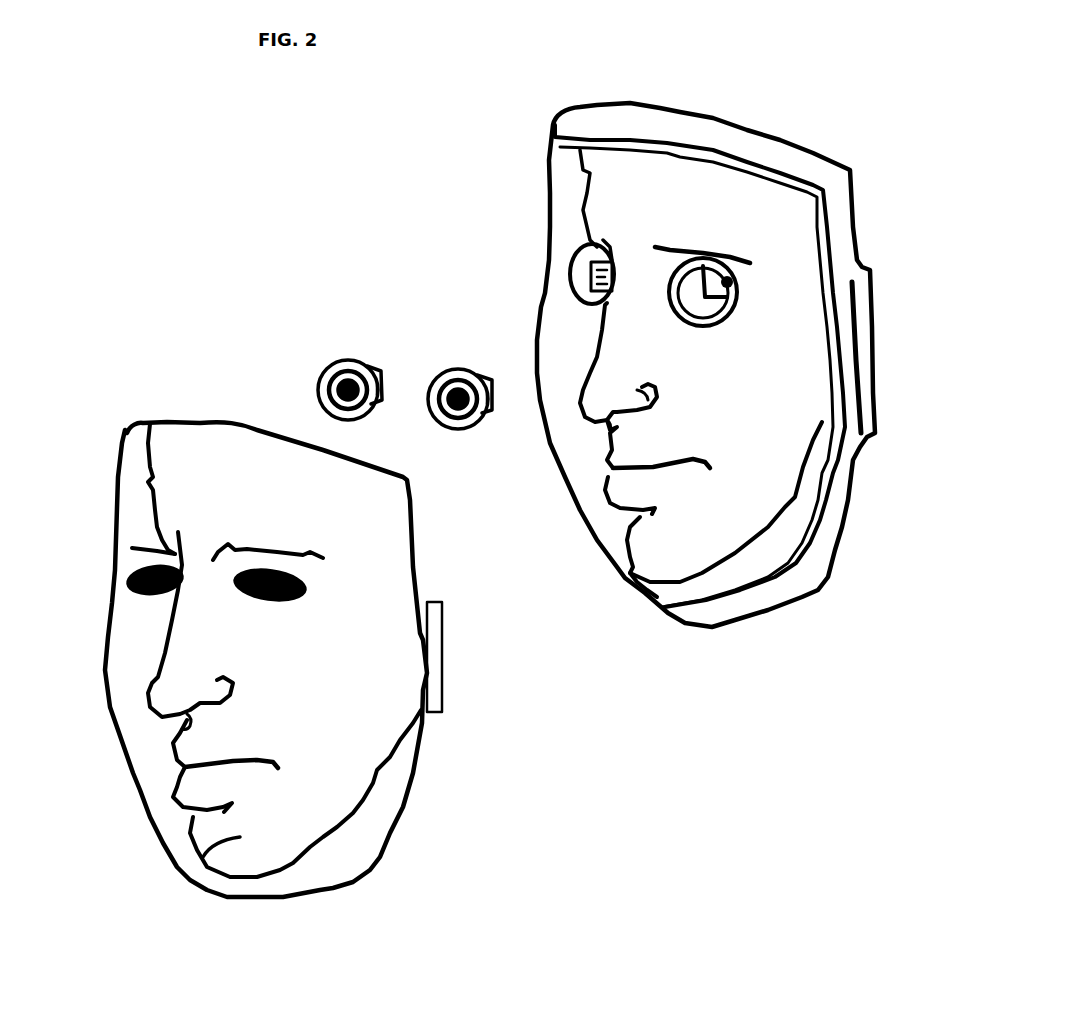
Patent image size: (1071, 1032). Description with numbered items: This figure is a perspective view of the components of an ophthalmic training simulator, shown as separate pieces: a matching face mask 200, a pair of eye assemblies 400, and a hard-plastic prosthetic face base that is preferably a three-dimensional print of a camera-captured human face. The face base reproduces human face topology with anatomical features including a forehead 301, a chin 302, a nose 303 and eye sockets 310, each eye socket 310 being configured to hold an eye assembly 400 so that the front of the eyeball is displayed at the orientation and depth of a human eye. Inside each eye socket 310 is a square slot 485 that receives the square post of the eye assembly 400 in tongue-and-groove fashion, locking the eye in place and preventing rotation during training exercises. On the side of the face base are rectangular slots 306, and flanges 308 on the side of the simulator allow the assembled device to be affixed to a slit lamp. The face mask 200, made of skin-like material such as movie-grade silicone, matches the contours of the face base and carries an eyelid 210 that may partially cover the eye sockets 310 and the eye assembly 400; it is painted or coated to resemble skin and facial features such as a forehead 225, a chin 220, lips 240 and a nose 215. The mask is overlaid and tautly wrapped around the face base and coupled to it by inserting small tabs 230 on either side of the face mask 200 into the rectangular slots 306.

The face mask 200 is at (266, 676).
The eyelid 210 is at (270, 545).
The chin 220 is at (188, 457).
The forehead 225 is at (166, 682).
The tabs 230 is at (433, 690).
The lips 240 is at (190, 785).
The nose 215 is at (196, 866).
The eye assembly 400 is at (368, 350).
The chin 302 is at (650, 556).
The eye socket 310 is at (692, 178).
The flanges 308 is at (870, 288).
The rectangular slots 306 is at (843, 410).
The square slot 485 is at (590, 268).
The forehead 301 is at (683, 270).
The nose 303 is at (603, 387).